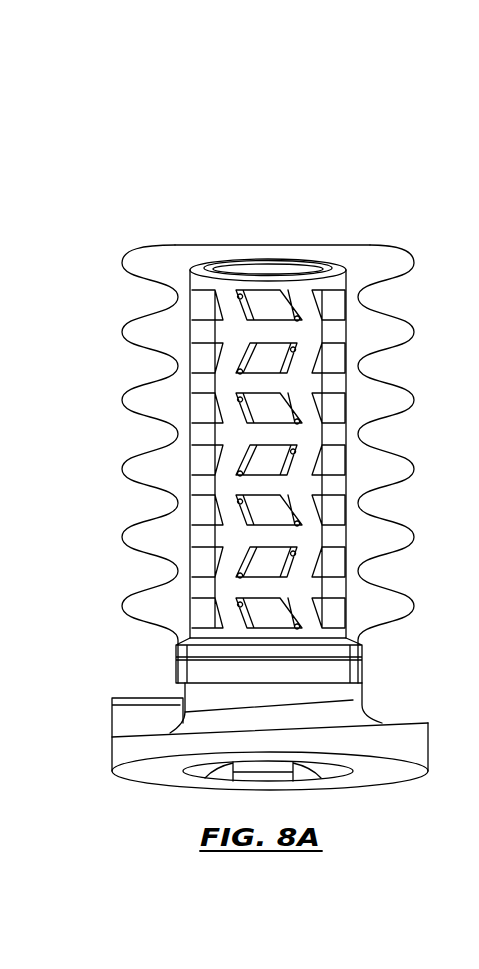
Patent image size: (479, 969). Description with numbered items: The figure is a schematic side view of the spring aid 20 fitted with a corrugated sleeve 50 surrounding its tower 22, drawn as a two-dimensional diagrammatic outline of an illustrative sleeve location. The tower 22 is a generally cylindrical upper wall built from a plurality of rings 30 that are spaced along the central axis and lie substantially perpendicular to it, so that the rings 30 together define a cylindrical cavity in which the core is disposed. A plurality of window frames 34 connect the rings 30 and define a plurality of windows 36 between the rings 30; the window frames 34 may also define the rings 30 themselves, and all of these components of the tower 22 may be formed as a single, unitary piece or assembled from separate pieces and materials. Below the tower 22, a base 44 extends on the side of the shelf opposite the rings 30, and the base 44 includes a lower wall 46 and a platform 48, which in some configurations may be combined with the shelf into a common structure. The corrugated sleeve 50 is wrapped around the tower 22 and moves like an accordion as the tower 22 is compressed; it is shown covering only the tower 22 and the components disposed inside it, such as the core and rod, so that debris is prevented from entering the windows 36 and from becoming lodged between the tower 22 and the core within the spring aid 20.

The spring aid 20 is at (131, 158).
The tower 22 is at (228, 287).
The rings 30 is at (337, 330).
The window frames 34 is at (232, 360).
The windows 36 is at (205, 470).
The base 44 is at (380, 798).
The lower wall 46 is at (197, 670).
The platform 48 is at (402, 728).
The corrugated sleeve 50 is at (334, 245).